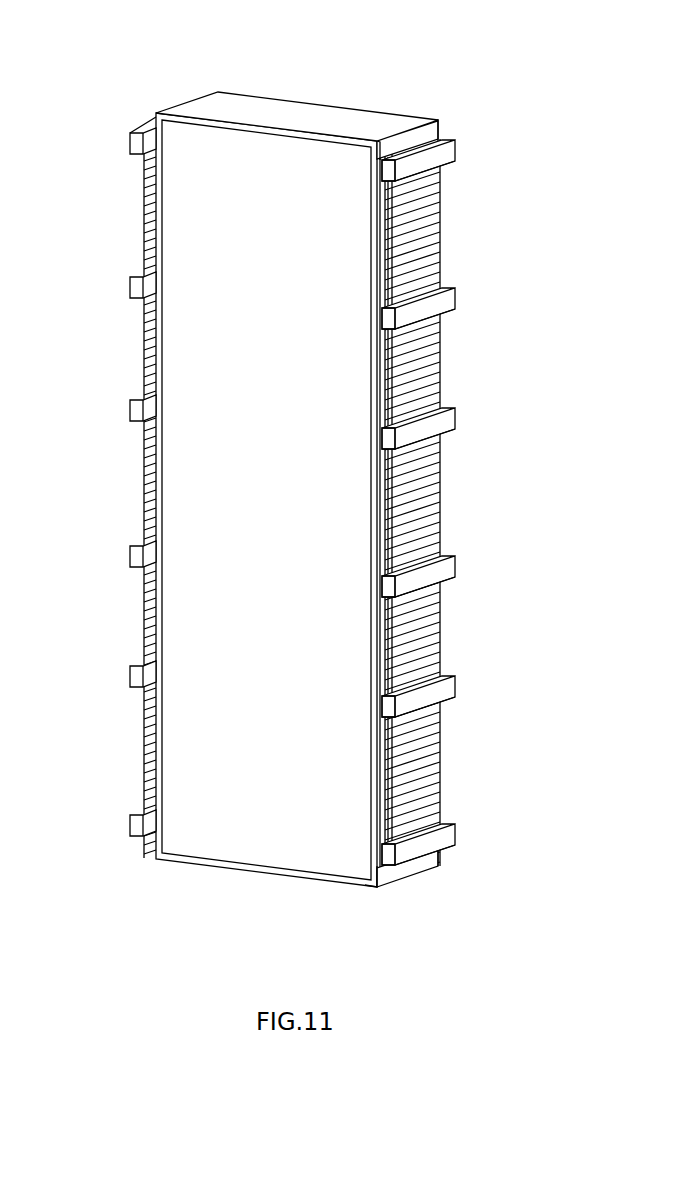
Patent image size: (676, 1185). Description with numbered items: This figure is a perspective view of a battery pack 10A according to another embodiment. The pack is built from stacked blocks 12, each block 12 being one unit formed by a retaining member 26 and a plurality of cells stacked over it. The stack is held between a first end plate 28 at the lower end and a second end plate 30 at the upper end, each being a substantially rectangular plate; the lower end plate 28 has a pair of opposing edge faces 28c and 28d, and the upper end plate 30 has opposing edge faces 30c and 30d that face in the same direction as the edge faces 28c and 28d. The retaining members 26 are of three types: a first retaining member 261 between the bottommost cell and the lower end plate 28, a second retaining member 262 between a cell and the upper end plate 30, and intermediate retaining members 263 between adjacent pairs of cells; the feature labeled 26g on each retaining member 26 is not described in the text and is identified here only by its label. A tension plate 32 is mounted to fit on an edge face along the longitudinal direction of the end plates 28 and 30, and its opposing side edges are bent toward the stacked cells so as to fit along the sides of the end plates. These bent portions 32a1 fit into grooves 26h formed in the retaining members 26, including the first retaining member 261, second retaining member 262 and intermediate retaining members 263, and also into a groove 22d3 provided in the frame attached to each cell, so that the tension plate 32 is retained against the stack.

The battery pack 10A is at (296, 464).
The block 12 is at (128, 218).
The retaining member 26 is at (118, 143).
The bracket (right side) 26g is at (459, 150).
The groove 26h is at (380, 172).
The first retaining member 261 is at (457, 820).
The second retaining member 262 is at (449, 166).
The intermediate retaining member 263 is at (450, 311).
The first end plate 28 is at (401, 874).
The edge face 28c is at (375, 886).
The edge face 28d is at (448, 862).
The second end plate 30 is at (363, 117).
The edge face 30c is at (374, 152).
The edge face 30d is at (446, 124).
The tension plate 32 is at (242, 844).
The bent portion 32a1 is at (379, 219).
The groove 22d3 is at (386, 254).